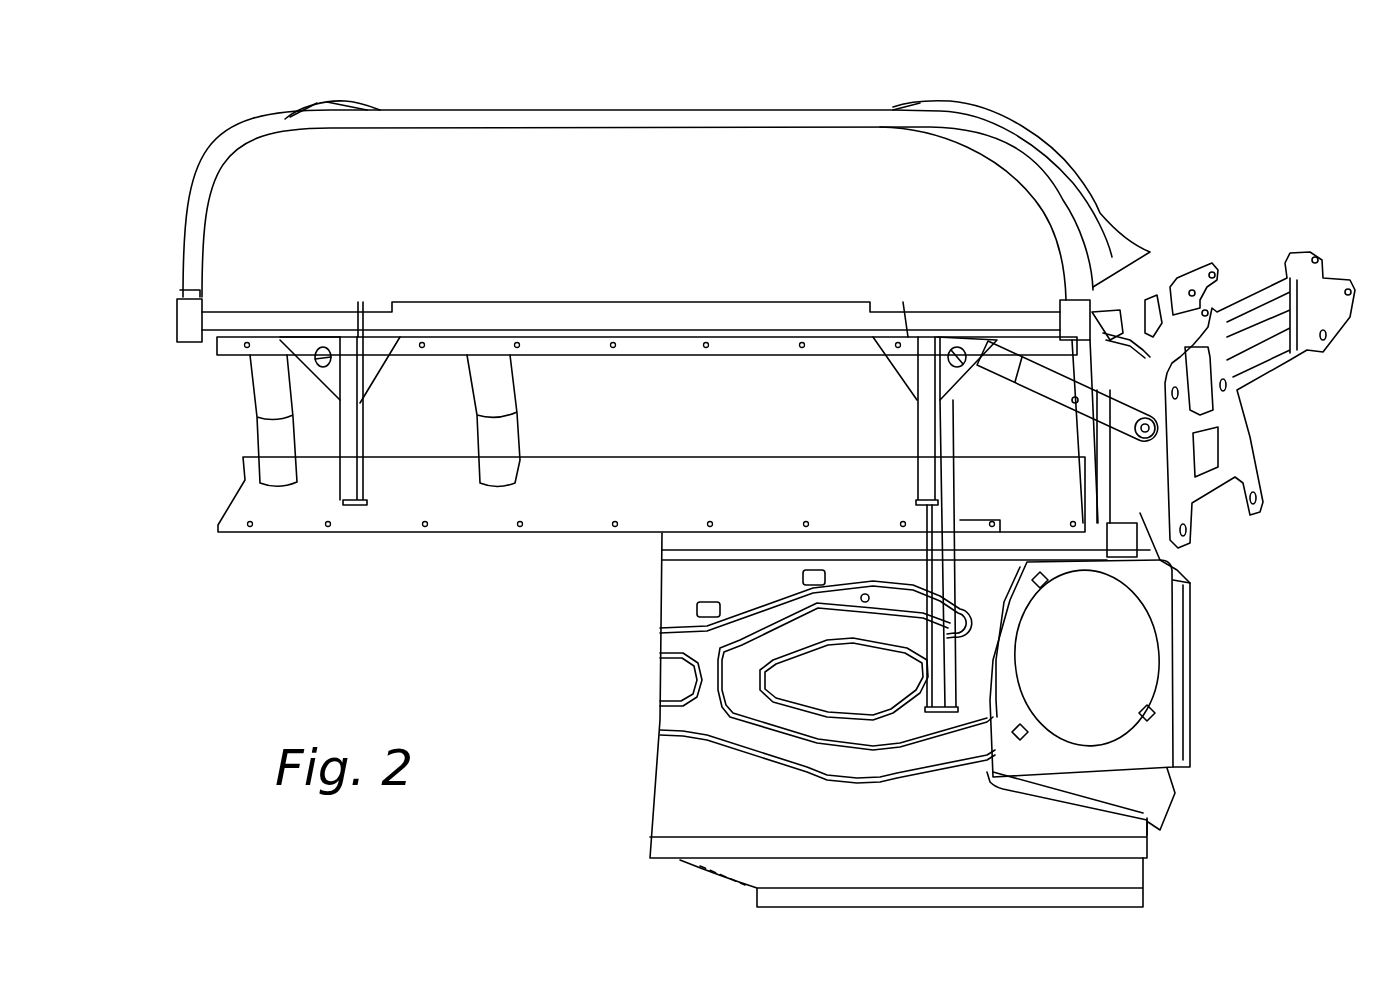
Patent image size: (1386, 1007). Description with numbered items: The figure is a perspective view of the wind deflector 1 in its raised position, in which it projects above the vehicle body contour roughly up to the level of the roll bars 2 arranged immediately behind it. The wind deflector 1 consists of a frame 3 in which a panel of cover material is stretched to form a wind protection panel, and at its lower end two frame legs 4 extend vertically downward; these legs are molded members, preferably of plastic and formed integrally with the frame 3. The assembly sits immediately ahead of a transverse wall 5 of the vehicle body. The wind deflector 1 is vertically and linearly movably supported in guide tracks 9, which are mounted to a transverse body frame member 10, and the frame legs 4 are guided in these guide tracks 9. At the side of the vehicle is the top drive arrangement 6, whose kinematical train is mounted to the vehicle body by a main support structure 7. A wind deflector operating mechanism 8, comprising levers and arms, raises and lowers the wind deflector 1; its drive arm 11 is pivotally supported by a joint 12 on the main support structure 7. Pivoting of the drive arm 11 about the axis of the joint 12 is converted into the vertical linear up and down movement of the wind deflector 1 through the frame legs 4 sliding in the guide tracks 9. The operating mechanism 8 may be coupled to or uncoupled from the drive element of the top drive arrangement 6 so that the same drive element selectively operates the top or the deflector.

The wind deflector 1 is at (608, 226).
The roll bars 2 is at (340, 100).
The frame 3 is at (253, 318).
The frame legs 4 is at (357, 427).
The transverse wall 5 is at (665, 818).
The top drive arrangement 6 is at (1240, 262).
The main support structure 7 is at (1293, 363).
The wind deflector operating mechanism 8 is at (1068, 418).
The guide tracks 9 is at (947, 517).
The transverse body frame member 10 is at (580, 513).
The drive arm 11 is at (1027, 390).
The joint 12 is at (1144, 433).